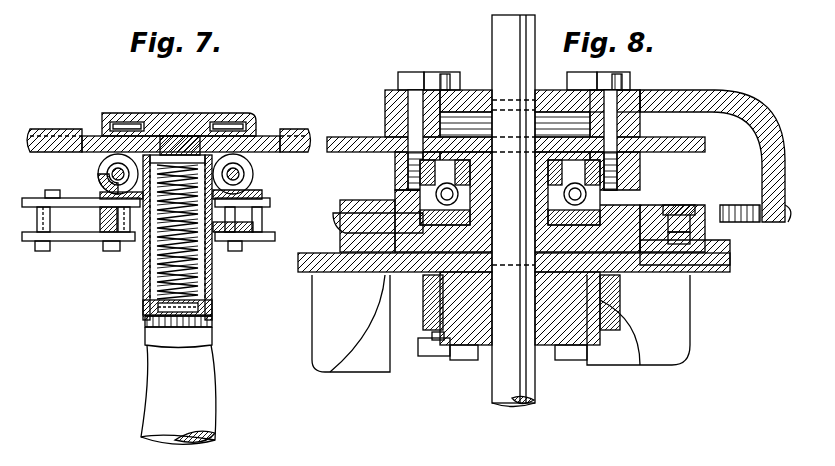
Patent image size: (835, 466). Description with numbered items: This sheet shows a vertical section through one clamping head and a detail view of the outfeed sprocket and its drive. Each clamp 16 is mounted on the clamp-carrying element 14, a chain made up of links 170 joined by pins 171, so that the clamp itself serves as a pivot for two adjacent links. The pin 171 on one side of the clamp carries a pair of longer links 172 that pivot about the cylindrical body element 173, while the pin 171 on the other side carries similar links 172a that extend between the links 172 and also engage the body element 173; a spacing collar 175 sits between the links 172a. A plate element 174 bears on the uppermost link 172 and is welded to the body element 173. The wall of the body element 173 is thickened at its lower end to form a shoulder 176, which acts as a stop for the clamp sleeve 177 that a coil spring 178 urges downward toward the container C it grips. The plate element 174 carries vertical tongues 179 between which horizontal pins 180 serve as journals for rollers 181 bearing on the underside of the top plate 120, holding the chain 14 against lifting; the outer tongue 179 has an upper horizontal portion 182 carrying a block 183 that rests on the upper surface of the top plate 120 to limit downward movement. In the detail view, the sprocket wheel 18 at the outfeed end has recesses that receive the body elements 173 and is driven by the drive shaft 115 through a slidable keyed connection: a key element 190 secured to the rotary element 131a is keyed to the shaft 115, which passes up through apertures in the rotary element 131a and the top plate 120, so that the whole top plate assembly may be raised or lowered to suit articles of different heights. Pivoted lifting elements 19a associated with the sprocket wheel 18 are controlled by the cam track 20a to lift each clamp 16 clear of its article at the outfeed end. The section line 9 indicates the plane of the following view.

In FIG. 8, the section line 9- 9 is at (310, 222).
In FIG. 7, the clamp-carrying element 14 is at (64, 252).
In FIG. 8, the clamp-carrying element 14 is at (680, 208).
In FIG. 7, the clamp 16 is at (140, 307).
In FIG. 8, the sprocket wheel 18 is at (647, 197).
In FIG. 8, the pivoted lifting element 19a is at (430, 300).
In FIG. 8, the cam track 20a is at (742, 258).
In FIG. 8, the drive shaft 115 is at (503, 392).
In FIG. 7, the top plate 120 is at (68, 130).
In FIG. 8, the top plate 120 is at (350, 137).
In FIG. 8, the rotary element 131a is at (380, 290).
In FIG. 7, the link 170 is at (62, 245).
In FIG. 7, the pin 171 is at (50, 196).
In FIG. 7, the link 172 is at (262, 199).
In FIG. 7, the link 172a is at (120, 226).
In FIG. 7, the cylindrical body element 173 is at (190, 150).
In FIG. 7, the plate element 174 is at (250, 186).
In FIG. 7, the spacing collar 175 is at (142, 240).
In FIG. 7, the shoulder 176 is at (212, 255).
In FIG. 7, the clamp sleeve 177 is at (143, 284).
In FIG. 7, the coil spring 178 is at (168, 180).
In FIG. 7, the tongue 179 is at (104, 164).
In FIG. 7, the pin 180 is at (244, 162).
In FIG. 7, the roller 181 is at (252, 170).
In FIG. 7, the upper horizontal portion 182 is at (116, 124).
In FIG. 7, the block 183 is at (152, 120).
In FIG. 8, the key element 190 is at (553, 362).
In FIG. 7, the conduit C is at (163, 416).